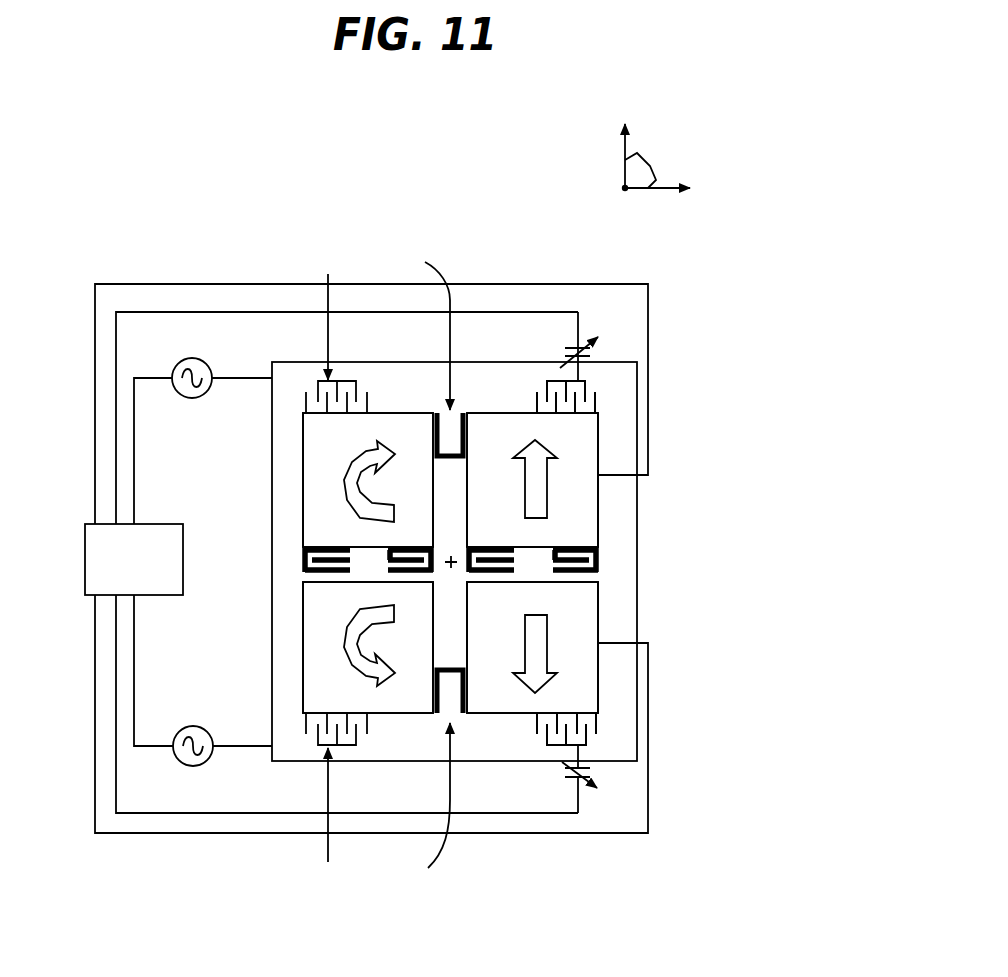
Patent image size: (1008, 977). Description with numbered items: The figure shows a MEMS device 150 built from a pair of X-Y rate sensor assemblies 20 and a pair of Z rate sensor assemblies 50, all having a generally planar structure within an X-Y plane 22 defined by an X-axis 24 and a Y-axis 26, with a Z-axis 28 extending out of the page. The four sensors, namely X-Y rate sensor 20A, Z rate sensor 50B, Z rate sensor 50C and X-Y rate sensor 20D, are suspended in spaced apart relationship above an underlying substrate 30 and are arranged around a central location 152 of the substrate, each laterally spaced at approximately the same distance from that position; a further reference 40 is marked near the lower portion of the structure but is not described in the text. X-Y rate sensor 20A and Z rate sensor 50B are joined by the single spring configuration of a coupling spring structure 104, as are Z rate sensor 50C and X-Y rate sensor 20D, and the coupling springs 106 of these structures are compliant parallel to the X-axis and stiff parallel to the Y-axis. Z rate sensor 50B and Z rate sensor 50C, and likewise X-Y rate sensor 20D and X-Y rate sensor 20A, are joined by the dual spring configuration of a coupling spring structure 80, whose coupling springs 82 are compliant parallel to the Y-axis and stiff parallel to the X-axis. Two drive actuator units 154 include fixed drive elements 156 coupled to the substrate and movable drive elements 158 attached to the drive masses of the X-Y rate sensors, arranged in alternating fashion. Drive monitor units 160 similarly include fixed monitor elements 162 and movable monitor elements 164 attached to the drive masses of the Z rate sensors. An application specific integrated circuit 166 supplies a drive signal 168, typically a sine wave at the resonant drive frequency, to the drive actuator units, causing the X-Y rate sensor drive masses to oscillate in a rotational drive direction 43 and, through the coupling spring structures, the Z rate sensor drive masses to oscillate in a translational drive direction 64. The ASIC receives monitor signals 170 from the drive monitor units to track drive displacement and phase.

The X-Y rate sensor assembly 20 is at (303, 427).
The X-Y rate sensor 20A is at (303, 473).
The X-Y rate sensor 20D is at (303, 675).
The X-Y plane 22 is at (650, 166).
The X-axis 24 is at (667, 187).
The Y-axis 26 is at (625, 140).
The Z-axis 28 is at (625, 194).
The substrate 30 is at (287, 366).
The anchor 40 is at (422, 753).
The rotational drive direction 43 is at (372, 450).
The Z rate sensor assembly 50 is at (597, 430).
The Z rate sensor 50B is at (590, 483).
The Z rate sensor 50C is at (592, 685).
The translational drive direction 64 is at (537, 478).
The coupling spring structure 80 is at (293, 563).
The coupling spring 82 is at (320, 574).
The coupling spring structure 104 is at (419, 566).
The coupling spring 106 is at (459, 438).
The MEMS device 150 is at (420, 953).
The central location 152 is at (453, 552).
The drive actuator unit 154 is at (330, 568).
The fixed drive element 156 is at (358, 382).
The movable drive element 158 is at (368, 406).
The drive monitor unit 160 is at (600, 382).
The fixed monitor element 162 is at (547, 382).
The movable monitor element 164 is at (537, 406).
The application specific integrated circuit (ASIC) 166 is at (85, 548).
The drive signal 168 is at (197, 358).
The monitor signal 170 is at (116, 432).